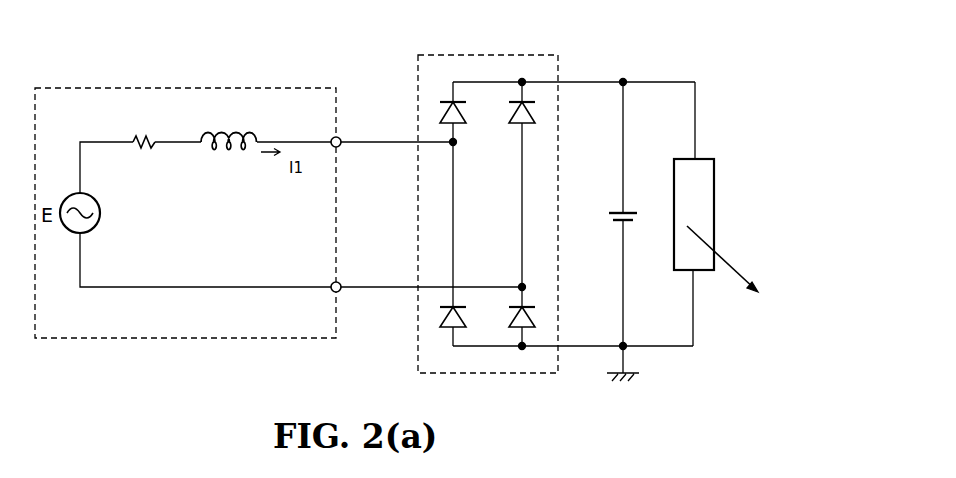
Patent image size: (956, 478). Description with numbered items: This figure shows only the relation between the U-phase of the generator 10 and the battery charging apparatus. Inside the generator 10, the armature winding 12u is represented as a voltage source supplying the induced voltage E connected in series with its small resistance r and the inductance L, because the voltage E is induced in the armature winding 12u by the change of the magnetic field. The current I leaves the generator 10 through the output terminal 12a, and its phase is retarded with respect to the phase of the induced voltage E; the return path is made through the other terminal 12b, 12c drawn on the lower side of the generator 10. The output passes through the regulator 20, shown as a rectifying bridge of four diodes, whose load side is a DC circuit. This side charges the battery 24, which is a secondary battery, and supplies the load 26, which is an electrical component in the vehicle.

The generator 10 is at (313, 88).
The output terminal 12a is at (340, 138).
The output terminal 12b is at (359, 327).
The output terminal 12c is at (338, 293).
The armature winding 12u is at (264, 162).
The regulator 20 is at (540, 55).
The battery 24 is at (615, 212).
The load 26 is at (716, 178).